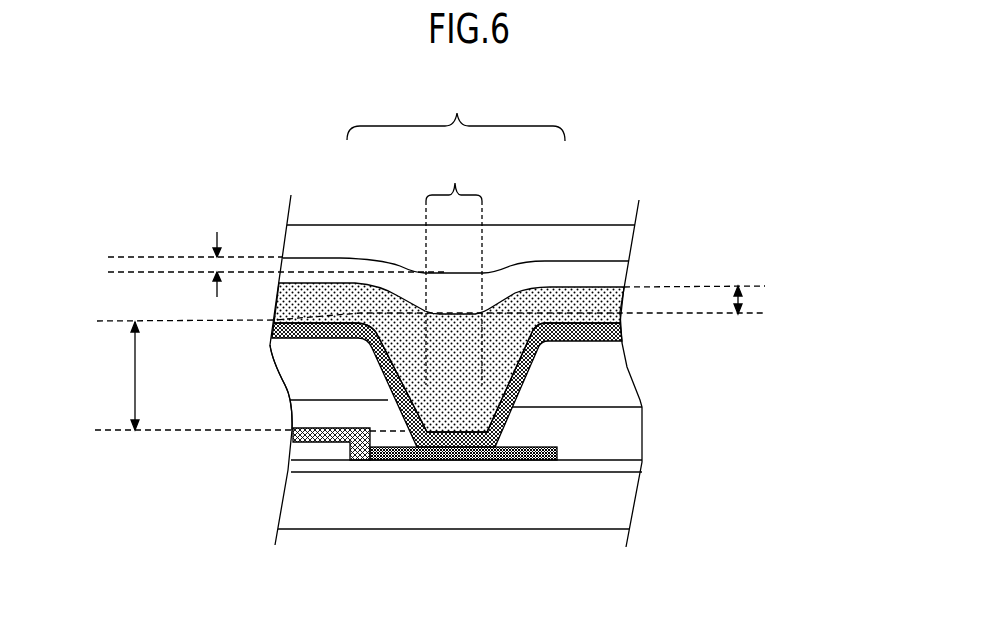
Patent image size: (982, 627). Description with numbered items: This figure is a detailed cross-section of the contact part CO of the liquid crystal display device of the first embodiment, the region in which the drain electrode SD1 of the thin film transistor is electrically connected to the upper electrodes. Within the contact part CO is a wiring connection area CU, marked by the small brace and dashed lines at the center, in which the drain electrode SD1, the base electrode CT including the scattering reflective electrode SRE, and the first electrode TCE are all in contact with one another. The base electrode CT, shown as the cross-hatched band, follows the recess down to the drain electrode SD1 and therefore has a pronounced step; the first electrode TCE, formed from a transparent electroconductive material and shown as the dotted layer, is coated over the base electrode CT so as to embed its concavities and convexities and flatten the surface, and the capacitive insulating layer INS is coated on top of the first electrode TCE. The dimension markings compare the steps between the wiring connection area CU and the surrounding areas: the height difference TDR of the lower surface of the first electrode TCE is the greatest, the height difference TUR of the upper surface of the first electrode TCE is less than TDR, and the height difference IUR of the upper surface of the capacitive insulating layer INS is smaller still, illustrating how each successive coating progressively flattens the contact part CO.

The capacitive insulating layer INS is at (612, 272).
The first electrode TCE is at (623, 320).
The scattering reflective electrode SRE is at (625, 343).
The drain electrode SD1 is at (371, 460).
The base electrode CT is at (270, 348).
The contact part CO is at (456, 110).
The wiring connection area CU is at (454, 269).
The height difference of the capacitive insulating layer upper surface IUR is at (214, 267).
The height difference of the lower surface of the first electrode TDR is at (134, 355).
The height difference of the first electrode upper surface TUR is at (739, 300).